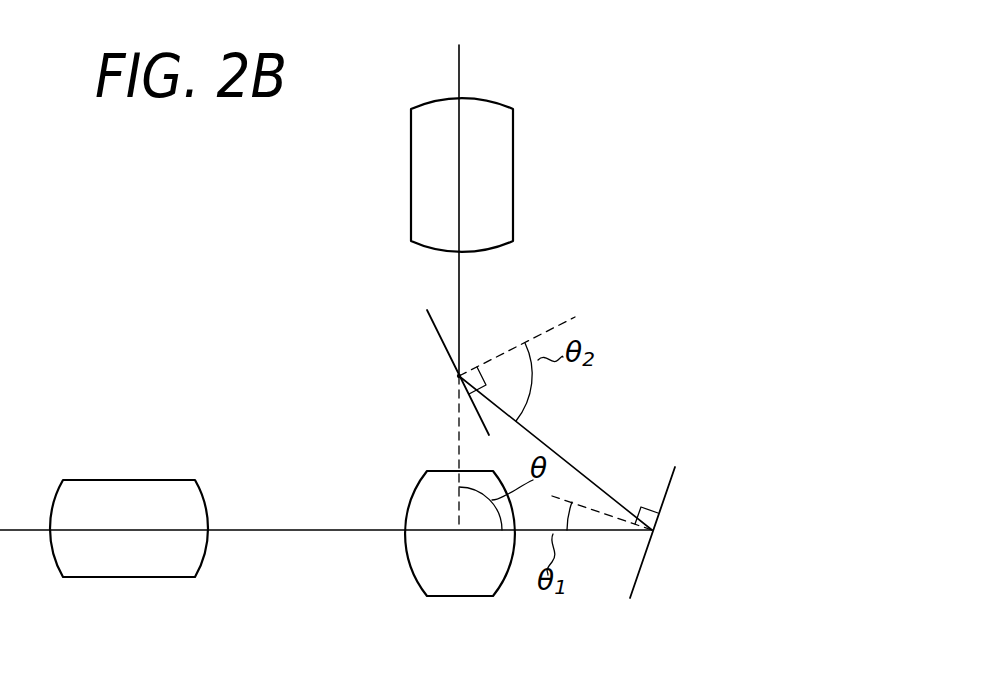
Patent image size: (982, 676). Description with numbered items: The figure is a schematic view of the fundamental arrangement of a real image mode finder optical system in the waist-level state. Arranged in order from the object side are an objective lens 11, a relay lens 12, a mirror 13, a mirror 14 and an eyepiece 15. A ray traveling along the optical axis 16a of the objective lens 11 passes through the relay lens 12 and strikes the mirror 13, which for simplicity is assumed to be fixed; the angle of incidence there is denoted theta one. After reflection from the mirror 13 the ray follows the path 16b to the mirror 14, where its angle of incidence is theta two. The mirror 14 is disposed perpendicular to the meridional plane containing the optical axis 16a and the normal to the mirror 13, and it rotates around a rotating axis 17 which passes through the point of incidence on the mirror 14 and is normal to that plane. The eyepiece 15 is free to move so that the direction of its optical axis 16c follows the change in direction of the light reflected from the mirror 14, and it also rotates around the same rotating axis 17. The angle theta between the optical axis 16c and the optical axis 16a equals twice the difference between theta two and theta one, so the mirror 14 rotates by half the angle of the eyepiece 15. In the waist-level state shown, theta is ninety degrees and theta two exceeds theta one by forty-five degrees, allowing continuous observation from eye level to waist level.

The objective lens 11 is at (125, 480).
The relay lens 12 is at (411, 495).
The mirror 13 is at (670, 481).
The mirror 14 is at (478, 417).
The eyepiece 15 is at (411, 165).
The optical axis 16a is at (310, 531).
The path 16b is at (545, 436).
The optical axis 16c is at (459, 278).
The rotating axis 17 is at (459, 376).